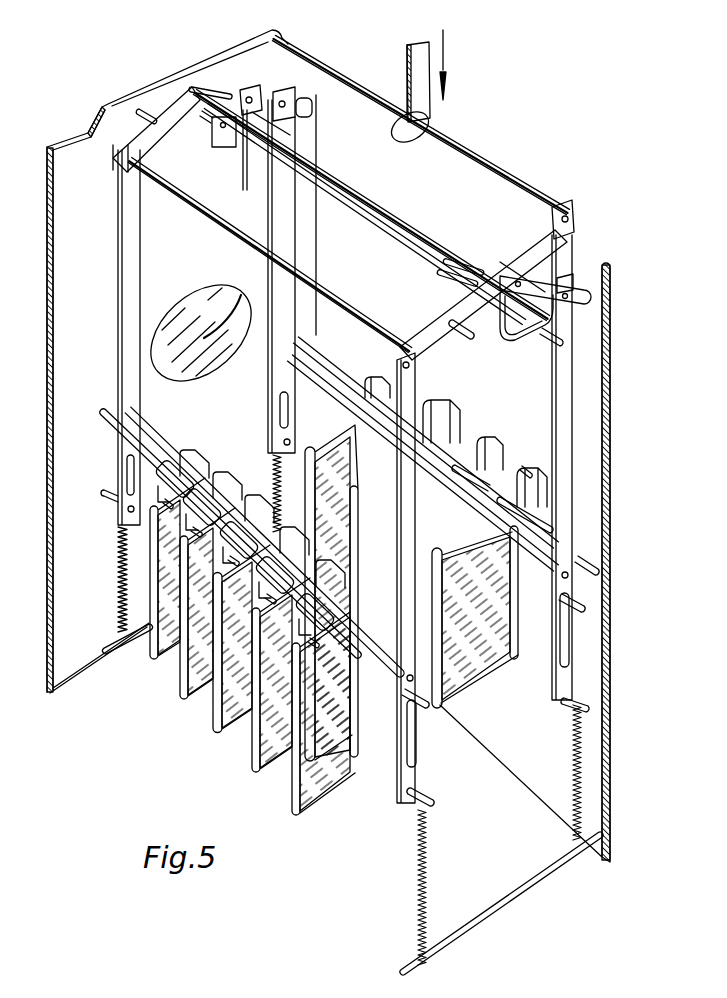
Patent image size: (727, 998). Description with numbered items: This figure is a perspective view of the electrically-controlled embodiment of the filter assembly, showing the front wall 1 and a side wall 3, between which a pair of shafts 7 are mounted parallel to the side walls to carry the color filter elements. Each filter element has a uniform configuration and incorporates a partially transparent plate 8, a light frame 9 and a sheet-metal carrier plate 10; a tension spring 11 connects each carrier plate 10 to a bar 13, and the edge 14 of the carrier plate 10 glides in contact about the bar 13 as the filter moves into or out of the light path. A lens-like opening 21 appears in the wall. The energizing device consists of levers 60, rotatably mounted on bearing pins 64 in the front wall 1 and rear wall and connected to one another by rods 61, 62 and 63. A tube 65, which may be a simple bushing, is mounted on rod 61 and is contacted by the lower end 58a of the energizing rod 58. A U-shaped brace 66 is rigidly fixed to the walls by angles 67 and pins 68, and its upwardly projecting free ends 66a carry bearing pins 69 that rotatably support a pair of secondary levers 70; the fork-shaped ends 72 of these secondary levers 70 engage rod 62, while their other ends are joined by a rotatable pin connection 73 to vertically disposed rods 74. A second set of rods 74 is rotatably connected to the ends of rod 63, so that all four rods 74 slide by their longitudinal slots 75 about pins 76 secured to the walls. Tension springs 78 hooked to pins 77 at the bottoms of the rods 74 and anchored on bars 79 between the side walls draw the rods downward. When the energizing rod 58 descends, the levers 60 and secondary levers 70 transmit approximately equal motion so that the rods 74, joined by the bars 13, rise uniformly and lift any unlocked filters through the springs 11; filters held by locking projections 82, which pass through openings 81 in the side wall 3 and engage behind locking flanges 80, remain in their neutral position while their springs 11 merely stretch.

The front wall 1 is at (97, 112).
The side wall 3 is at (598, 465).
The shaft 7 is at (105, 434).
The partially transparent plate 8 is at (470, 668).
The frame 9 is at (513, 610).
The carrier plate 10 is at (340, 434).
The tension spring 11 is at (190, 476).
The bar 13 is at (157, 432).
The edge 14 is at (370, 370).
The lens 21 is at (192, 287).
The energizing rod 58 is at (418, 58).
The lower end of energizing rod 58a is at (430, 128).
The lever 60 is at (152, 103).
The rod 61 is at (485, 170).
The rod 62 is at (373, 205).
The rod 63 is at (325, 302).
The bearing pin 64 is at (141, 108).
The tube 65 is at (395, 125).
The U-shaped brace 66 is at (343, 200).
The free end of U-shaped member 66a is at (255, 113).
The angle 67 is at (218, 148).
The pin 68 is at (203, 116).
The bearing pin 69 is at (248, 94).
The secondary lever 70 is at (283, 92).
The fork-shaped end 72 is at (200, 80).
The rotatable pin connection 73 is at (300, 100).
The vertically disposed rod 74 is at (128, 291).
The longitudinal slot 75 is at (568, 632).
The pin 76 is at (586, 608).
The pin 77 is at (570, 705).
The tension spring 78 is at (272, 462).
The bar 79 is at (490, 905).
The locking flange 80 is at (525, 509).
The opening 81 is at (525, 470).
The locking projection 82 is at (540, 480).